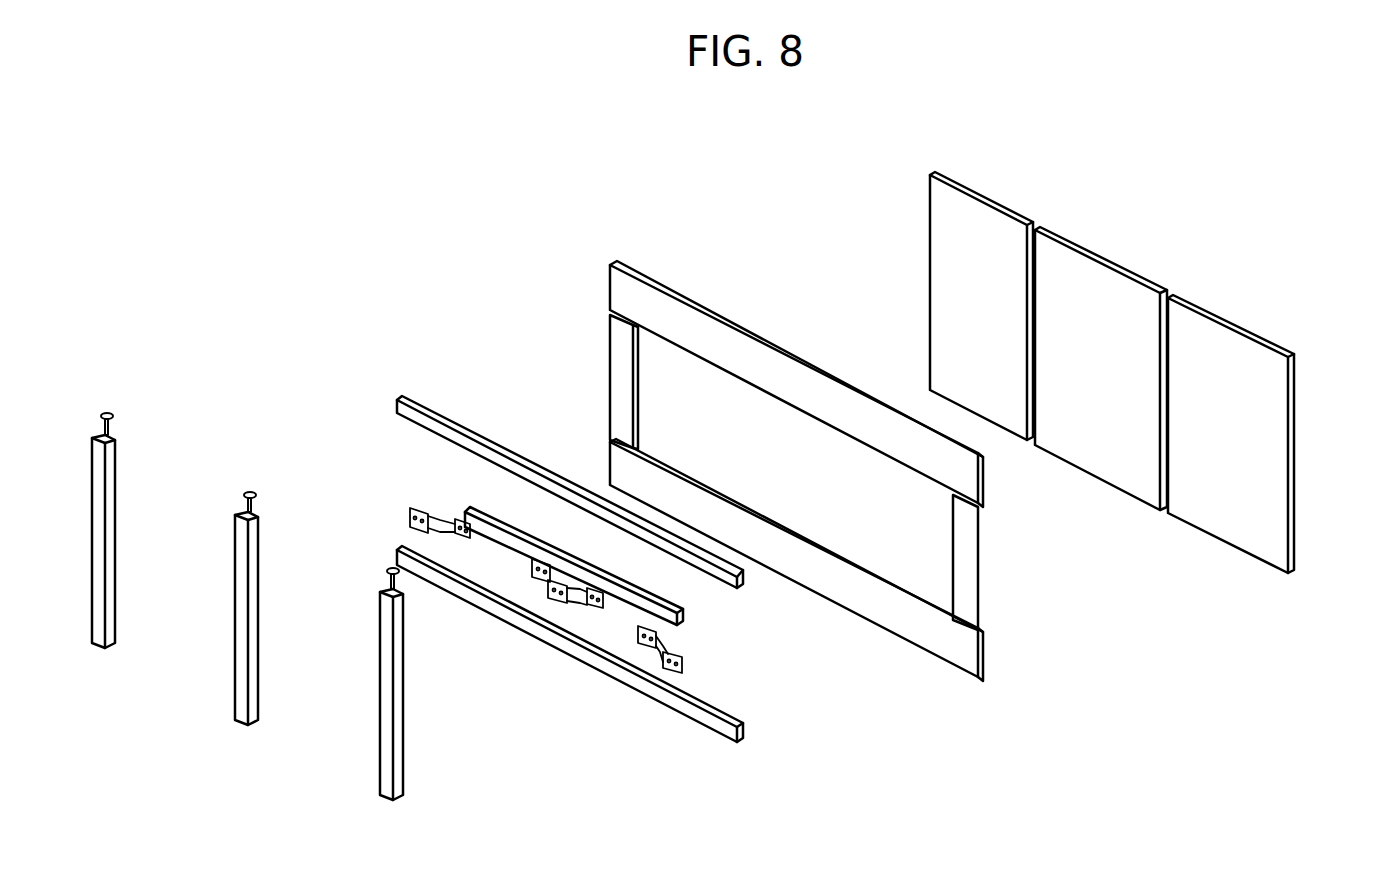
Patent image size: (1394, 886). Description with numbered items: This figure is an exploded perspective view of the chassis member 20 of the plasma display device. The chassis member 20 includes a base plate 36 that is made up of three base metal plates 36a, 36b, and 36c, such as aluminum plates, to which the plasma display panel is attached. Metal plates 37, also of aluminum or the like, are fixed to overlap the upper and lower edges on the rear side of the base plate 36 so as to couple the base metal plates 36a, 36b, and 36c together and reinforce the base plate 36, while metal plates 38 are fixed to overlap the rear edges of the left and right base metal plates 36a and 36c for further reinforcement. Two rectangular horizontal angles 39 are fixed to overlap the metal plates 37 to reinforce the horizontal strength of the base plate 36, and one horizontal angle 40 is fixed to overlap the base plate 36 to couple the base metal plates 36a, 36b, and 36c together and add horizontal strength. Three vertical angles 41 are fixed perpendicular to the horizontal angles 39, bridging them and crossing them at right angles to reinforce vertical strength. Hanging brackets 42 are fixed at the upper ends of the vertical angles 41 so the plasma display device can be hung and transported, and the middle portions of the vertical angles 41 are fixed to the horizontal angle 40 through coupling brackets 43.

The chassis member 20 is at (936, 712).
The base plate 36 is at (1154, 364).
The base metal plate 36a is at (980, 210).
The base metal plate 36b is at (1097, 275).
The base metal plate 36c is at (1227, 347).
The metal plates 37 is at (762, 362).
The metal plates 38 is at (618, 382).
The horizontal angles 39 is at (445, 428).
The horizontal angle 40 is at (510, 540).
The vertical angles 41 is at (102, 587).
The hanging brackets 42 is at (387, 564).
The coupling brackets 43 is at (415, 507).